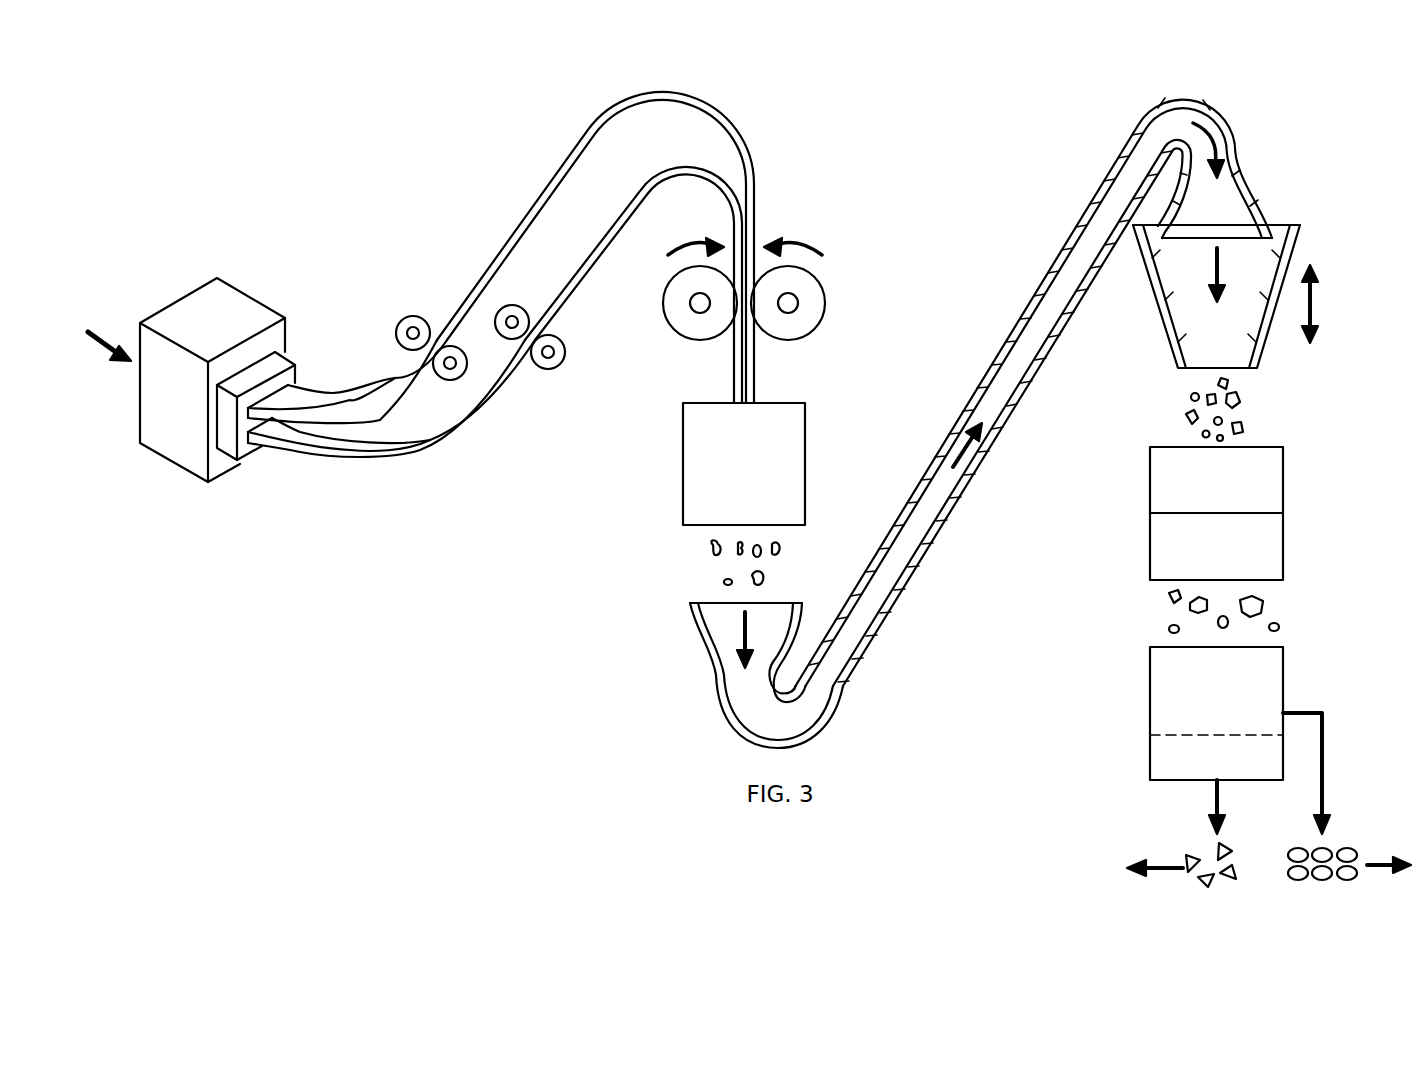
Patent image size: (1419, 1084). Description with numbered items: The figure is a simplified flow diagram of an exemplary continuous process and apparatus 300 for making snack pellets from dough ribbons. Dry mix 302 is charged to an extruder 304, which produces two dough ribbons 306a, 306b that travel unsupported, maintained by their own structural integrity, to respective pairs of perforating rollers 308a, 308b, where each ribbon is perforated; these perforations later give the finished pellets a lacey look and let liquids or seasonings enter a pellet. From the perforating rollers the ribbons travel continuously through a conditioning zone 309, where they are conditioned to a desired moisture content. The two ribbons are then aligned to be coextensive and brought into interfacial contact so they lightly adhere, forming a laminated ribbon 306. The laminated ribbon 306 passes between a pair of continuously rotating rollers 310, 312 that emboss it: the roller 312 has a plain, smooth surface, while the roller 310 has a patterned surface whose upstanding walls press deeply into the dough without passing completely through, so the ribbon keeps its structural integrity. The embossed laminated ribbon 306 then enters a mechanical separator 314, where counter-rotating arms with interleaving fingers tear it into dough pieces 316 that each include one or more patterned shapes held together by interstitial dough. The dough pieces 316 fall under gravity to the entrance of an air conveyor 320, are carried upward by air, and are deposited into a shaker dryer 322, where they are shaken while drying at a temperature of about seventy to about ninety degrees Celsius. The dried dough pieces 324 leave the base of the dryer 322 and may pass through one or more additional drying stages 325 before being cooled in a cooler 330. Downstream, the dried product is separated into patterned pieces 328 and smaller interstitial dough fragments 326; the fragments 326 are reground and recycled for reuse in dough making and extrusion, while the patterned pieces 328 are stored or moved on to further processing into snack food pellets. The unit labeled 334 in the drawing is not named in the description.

The continuous process and apparatus 300 is at (397, 134).
The dry mix 302 is at (113, 334).
The extruder 304 is at (177, 298).
The laminated ribbon 306 is at (764, 225).
The first dough ribbon 306a is at (348, 390).
The second dough ribbon 306b is at (348, 460).
The perforating rollers 308a is at (455, 340).
The perforating rollers 308b is at (495, 335).
The conditioning zone 309 is at (667, 88).
The patterned roller 310 is at (826, 303).
The smooth roller 312 is at (697, 341).
The mechanical separator 314 is at (683, 470).
The dough pieces 316 is at (710, 545).
The air conveyor 320 is at (975, 477).
The shaker dryer 322 is at (1295, 256).
The dried dough pieces 324 is at (1243, 400).
The additional drying stages 325 is at (1294, 501).
The interstitial dough fragments 326 is at (1210, 892).
The patterned pieces 328 is at (1325, 894).
The cooler 330 is at (1283, 546).
The separator 334 is at (1283, 690).